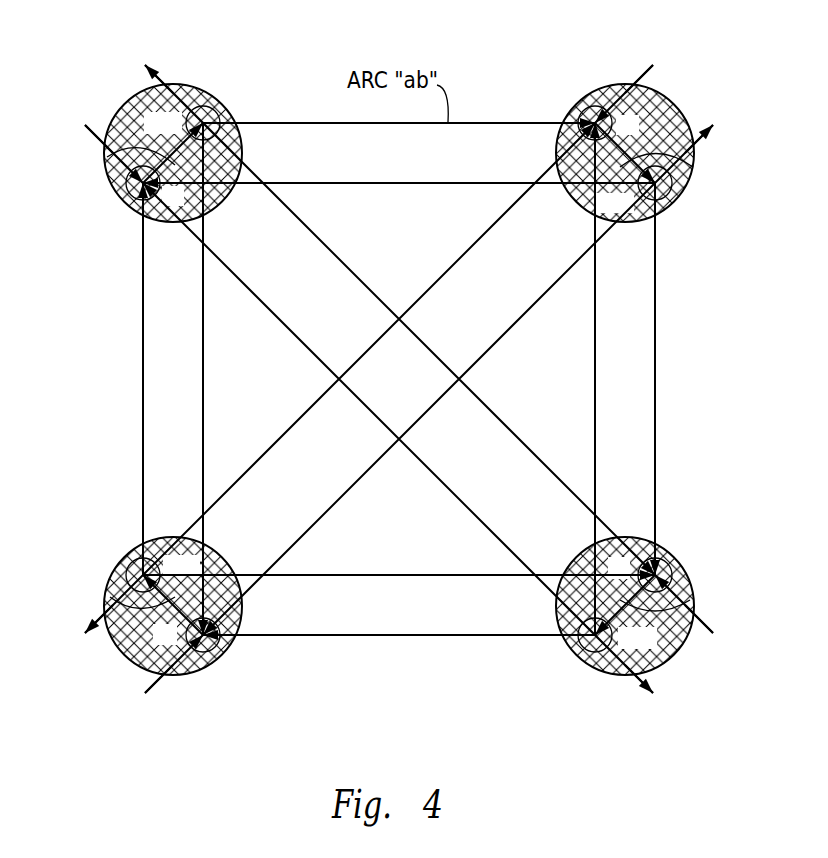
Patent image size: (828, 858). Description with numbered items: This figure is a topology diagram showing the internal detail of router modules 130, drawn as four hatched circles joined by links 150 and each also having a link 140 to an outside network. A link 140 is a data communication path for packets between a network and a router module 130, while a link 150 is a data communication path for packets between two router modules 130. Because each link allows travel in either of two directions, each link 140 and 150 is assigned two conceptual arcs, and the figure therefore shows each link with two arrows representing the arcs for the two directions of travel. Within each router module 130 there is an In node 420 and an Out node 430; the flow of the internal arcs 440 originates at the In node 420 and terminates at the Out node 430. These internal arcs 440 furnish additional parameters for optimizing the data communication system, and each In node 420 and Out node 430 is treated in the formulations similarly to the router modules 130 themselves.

The router module 130 is at (613, 677).
The link 140 is at (400, 384).
The link 150 is at (399, 379).
The In node 420 is at (400, 382).
The Out node 430 is at (399, 380).
The internal arc 440 is at (399, 379).